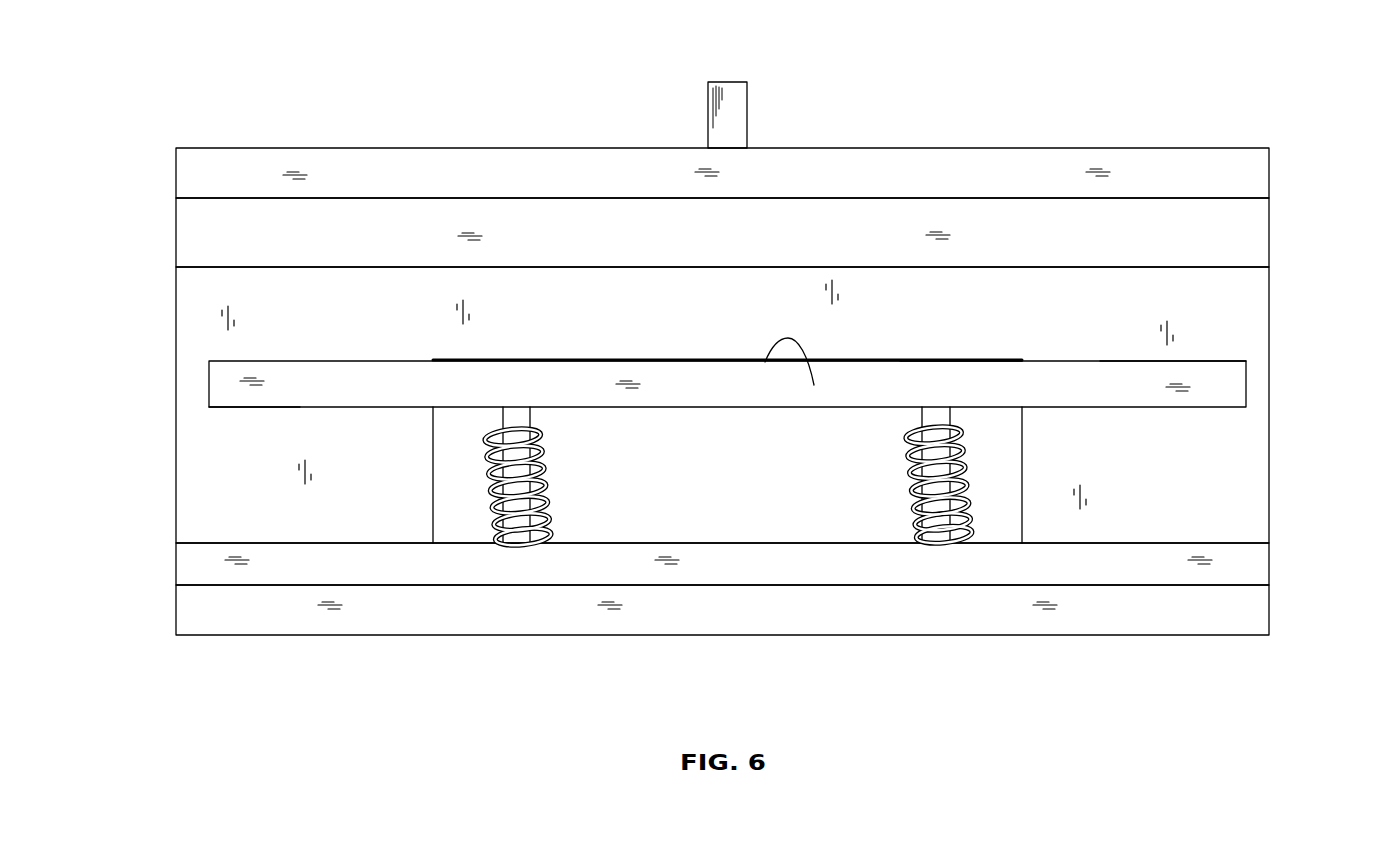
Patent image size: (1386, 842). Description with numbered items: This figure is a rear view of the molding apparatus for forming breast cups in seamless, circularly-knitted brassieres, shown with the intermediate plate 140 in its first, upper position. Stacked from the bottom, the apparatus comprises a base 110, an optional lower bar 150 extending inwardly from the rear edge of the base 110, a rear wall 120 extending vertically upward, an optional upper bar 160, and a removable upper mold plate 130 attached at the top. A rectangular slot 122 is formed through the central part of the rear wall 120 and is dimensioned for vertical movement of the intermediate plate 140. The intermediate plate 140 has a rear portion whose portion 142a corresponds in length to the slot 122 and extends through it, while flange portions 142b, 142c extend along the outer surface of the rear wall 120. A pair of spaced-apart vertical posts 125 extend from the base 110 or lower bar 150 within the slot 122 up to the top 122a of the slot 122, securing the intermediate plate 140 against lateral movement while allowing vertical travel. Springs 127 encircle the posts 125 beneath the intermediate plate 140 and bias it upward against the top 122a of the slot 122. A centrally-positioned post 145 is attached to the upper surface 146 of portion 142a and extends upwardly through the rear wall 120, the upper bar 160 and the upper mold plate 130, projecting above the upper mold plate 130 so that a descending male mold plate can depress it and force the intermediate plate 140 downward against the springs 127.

The base 110 is at (1270, 608).
The rear wall 120 is at (1255, 435).
The rectangular slot 122 is at (433, 522).
The top of the slot 122a is at (562, 358).
The vertical posts 125 is at (520, 528).
The springs 127 is at (547, 514).
The upper mold plate 130 is at (1270, 158).
The intermediate plate 140 is at (209, 393).
The portion of the rear portion 142a is at (970, 390).
The flange portion 142b is at (252, 400).
The flange portion 142c is at (1215, 378).
The centrally-positioned post 145 is at (741, 93).
The upper surface 146 is at (814, 385).
The lower bar 150 is at (1270, 567).
The upper bar 160 is at (1270, 233).